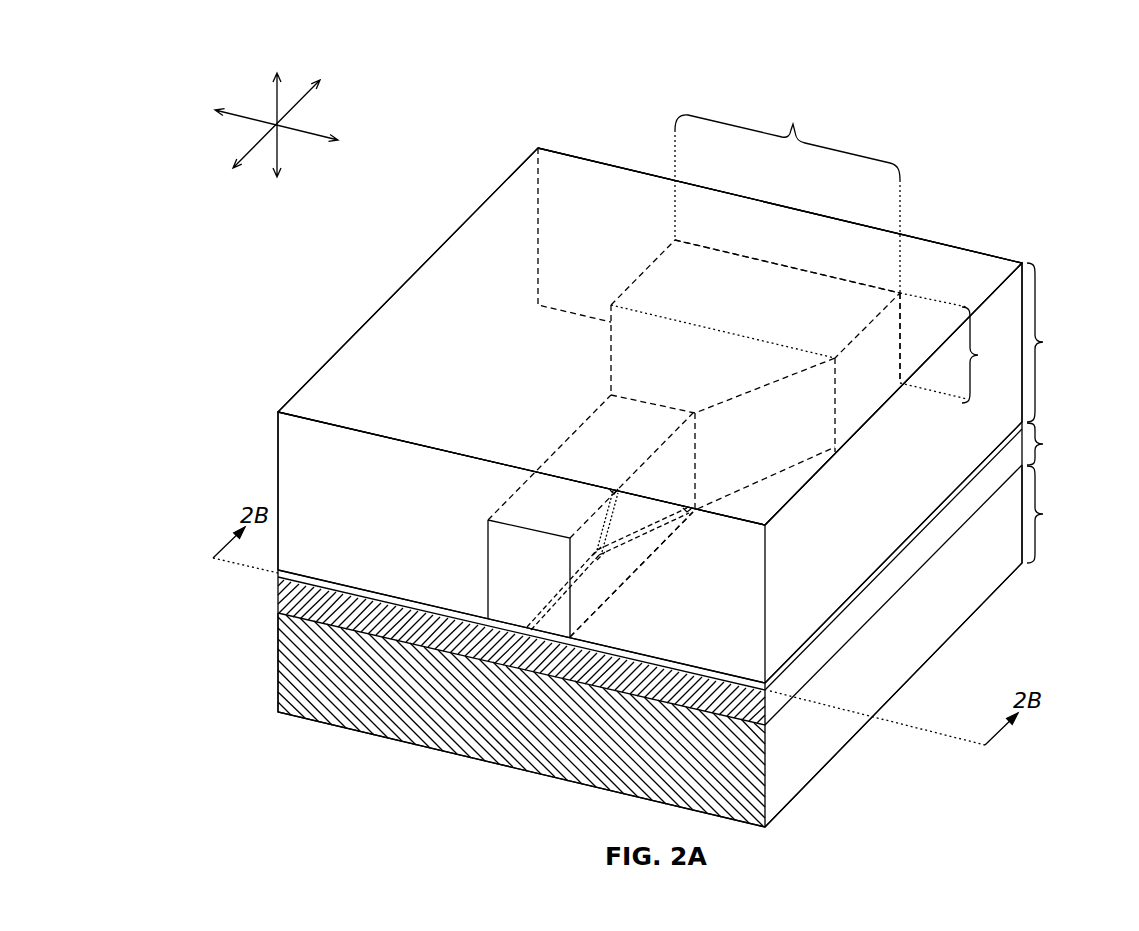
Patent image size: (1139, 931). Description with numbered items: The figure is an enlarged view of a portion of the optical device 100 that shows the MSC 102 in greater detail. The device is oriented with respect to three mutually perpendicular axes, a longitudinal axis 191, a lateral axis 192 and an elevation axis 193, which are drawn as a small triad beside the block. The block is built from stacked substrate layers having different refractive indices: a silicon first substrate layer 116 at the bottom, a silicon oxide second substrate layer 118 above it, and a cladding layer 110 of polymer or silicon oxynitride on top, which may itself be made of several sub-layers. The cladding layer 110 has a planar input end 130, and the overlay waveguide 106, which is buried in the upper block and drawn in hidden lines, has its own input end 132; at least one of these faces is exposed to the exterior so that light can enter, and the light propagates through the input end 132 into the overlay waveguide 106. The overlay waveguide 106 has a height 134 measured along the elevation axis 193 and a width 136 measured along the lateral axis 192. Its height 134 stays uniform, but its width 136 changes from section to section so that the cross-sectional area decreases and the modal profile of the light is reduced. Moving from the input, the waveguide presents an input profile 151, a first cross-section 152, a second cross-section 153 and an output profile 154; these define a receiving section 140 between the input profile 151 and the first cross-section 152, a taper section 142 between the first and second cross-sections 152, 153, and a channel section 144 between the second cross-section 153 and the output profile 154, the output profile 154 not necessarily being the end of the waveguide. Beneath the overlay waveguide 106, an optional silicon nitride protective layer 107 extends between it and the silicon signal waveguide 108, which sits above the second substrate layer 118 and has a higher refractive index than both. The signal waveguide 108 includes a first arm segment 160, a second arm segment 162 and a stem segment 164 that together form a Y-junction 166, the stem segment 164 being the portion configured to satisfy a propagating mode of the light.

The optical device 100 is at (1030, 143).
The MSC 102 is at (542, 327).
The overlay waveguide 106 is at (727, 267).
The protective layer 107 is at (983, 467).
The signal waveguide 108 is at (535, 590).
The cladding layer 110 is at (1043, 342).
The first substrate layer 116 is at (1043, 514).
The second substrate layer 118 is at (1043, 444).
The input end 130 is at (952, 247).
The input end 132 is at (902, 335).
The height 134 is at (978, 355).
The width 136 is at (794, 122).
The receiving section 140 is at (870, 363).
The taper section 142 is at (778, 438).
The channel section 144 is at (622, 558).
The input profile 151 is at (842, 278).
The first cross-section 152 is at (723, 327).
The second cross-section 153 is at (663, 403).
The output profile 154 is at (529, 532).
The first arm segment 160 is at (595, 548).
The second arm segment 162 is at (683, 512).
The stem segment 164 is at (533, 605).
The Y-junction 166 is at (624, 527).
The longitudinal axis 191 is at (297, 108).
The lateral axis 192 is at (247, 118).
The elevation axis 193 is at (278, 153).